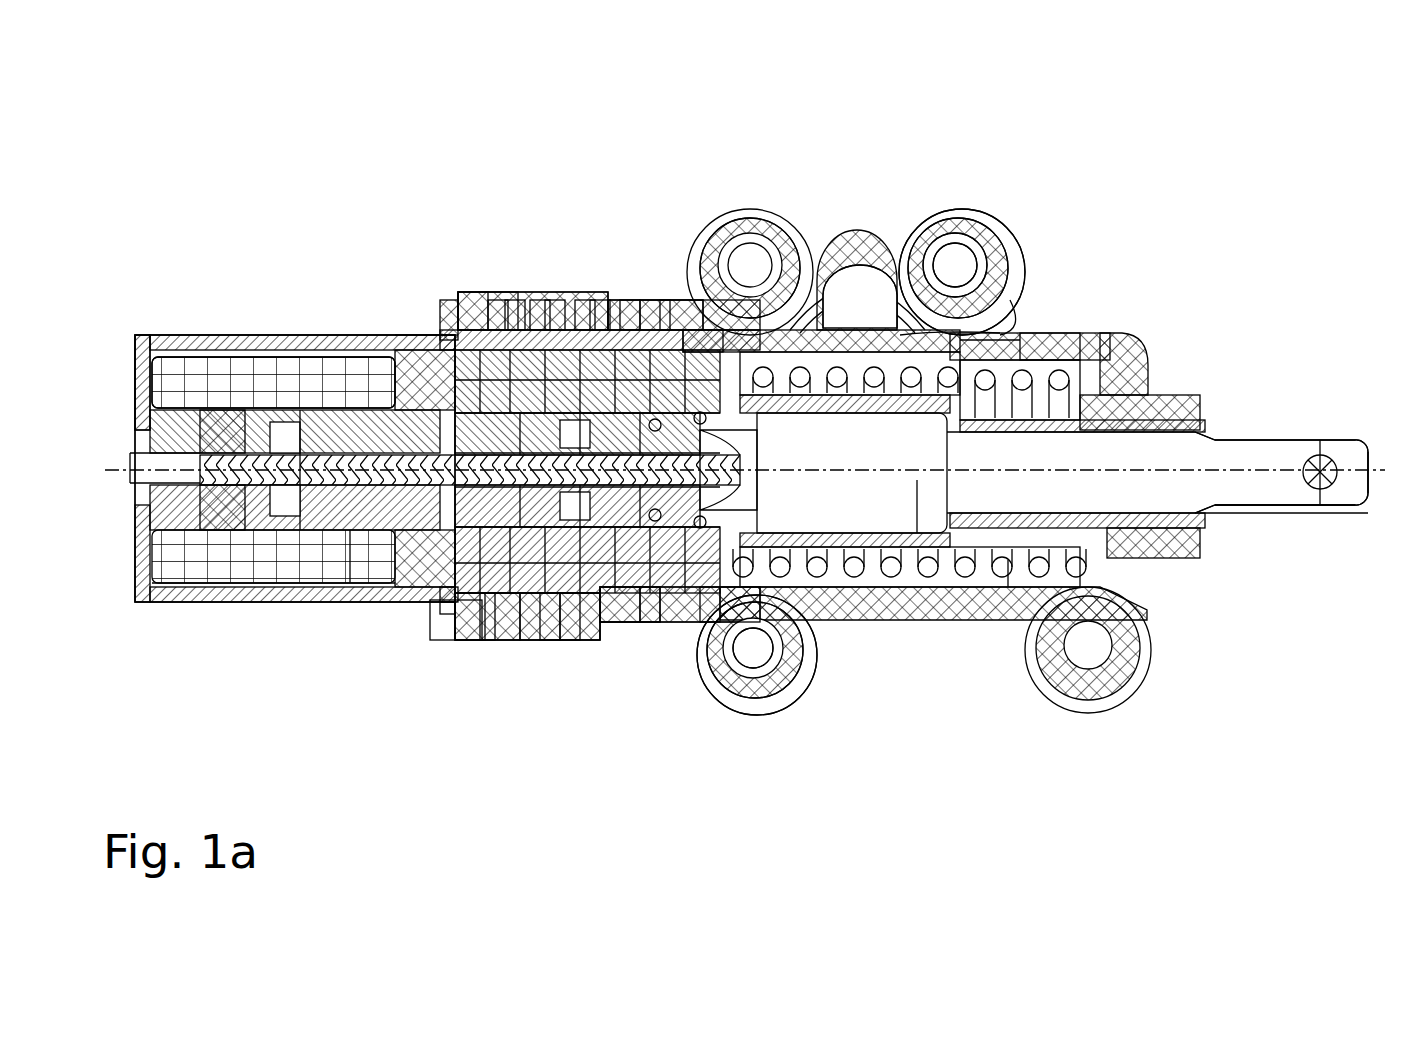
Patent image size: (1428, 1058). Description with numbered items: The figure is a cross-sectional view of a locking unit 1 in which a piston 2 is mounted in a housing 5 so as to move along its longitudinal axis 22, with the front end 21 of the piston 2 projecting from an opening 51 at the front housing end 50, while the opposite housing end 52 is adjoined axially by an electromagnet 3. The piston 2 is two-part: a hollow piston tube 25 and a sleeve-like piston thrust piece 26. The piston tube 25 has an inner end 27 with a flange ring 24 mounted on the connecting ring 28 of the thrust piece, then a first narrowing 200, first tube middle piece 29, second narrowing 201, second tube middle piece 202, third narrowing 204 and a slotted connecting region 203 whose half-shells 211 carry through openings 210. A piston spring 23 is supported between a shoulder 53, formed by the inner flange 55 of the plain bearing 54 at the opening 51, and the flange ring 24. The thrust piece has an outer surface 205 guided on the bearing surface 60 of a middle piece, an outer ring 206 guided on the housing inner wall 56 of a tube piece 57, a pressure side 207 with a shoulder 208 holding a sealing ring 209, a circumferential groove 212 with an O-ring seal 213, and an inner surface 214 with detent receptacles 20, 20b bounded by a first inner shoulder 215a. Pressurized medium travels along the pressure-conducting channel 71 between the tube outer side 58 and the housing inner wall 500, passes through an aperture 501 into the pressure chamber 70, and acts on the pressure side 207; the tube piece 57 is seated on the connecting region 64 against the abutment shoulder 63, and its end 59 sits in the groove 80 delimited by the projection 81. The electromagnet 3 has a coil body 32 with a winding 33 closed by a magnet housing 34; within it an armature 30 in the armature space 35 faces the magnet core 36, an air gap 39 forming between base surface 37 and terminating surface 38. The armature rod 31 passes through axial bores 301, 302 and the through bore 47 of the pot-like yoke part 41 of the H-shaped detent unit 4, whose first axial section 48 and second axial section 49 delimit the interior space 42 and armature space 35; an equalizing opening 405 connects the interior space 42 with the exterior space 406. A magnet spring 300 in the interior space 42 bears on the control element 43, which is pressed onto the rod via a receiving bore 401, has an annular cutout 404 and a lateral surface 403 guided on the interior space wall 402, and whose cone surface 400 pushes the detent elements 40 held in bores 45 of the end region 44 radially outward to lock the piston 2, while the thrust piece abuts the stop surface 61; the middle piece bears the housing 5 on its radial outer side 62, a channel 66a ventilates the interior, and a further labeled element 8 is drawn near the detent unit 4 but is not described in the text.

The locking unit 1 is at (240, 163).
The piston 2 is at (572, 295).
The electromagnet 3 is at (455, 735).
The detent unit 4 is at (604, 640).
The housing 5 is at (1090, 330).
The seal 8 is at (480, 647).
The detent receptacle 20 is at (768, 210).
The second detent receptacle 20b is at (560, 295).
The front end 21 is at (1380, 422).
The longitudinal axis 22 is at (905, 610).
The piston spring 23 is at (1060, 330).
The flange ring 24 is at (815, 320).
The piston tube 25 is at (1007, 303).
The piston thrust piece 26 is at (640, 640).
The inner end 27 is at (830, 640).
The connecting ring 28 is at (958, 262).
The first tube middle piece 29 is at (870, 615).
The armature 30 is at (347, 335).
The armature rod 31 is at (498, 292).
The coil body 32 is at (172, 335).
The winding 33 is at (232, 335).
The magnet housing 34 is at (210, 335).
The armature space 35 is at (297, 602).
The magnet core 36 is at (125, 485).
The base surface 37 is at (312, 335).
The terminating surface 38 is at (268, 602).
The air gap 39 is at (275, 335).
The detent elements 40 is at (670, 640).
The yoke part 41 is at (490, 640).
The interior space 42 is at (602, 295).
The control element 43 is at (780, 700).
The end region 44 is at (745, 710).
The bores 45 is at (720, 705).
The through bore 47 is at (410, 335).
The first axial section 48 is at (522, 782).
The second axial section 49 is at (430, 600).
The front housing end 50 is at (1205, 418).
The opening 51 is at (1210, 545).
The housing end 52 is at (447, 300).
The shoulder 53 is at (1140, 405).
The plain bearing 54 is at (1155, 565).
The inner flange 55 is at (1140, 340).
The housing inner wall 56 is at (893, 277).
The tube piece 57 is at (887, 240).
The tube outer side 58 is at (720, 225).
The end 59 is at (1010, 277).
The bearing surface 60 is at (630, 300).
The stop surface 61 is at (445, 332).
The radial outer side 62 is at (455, 650).
The abutment shoulder 63 is at (585, 295).
The connecting region 64 is at (580, 640).
The channel 66a is at (445, 612).
The pressure chamber 70 is at (657, 297).
The pressure-conducting channel 71 is at (853, 290).
The groove 80 is at (1000, 317).
The projection 81 is at (950, 620).
The first narrowing 200 is at (815, 690).
The second narrowing 201 is at (980, 620).
The second tube middle piece 202 is at (1008, 560).
The connecting region 203 is at (1210, 530).
The third narrowing 204 is at (1333, 427).
The outer surface 205 is at (565, 640).
The outer ring 206 is at (805, 265).
The pressure side 207 is at (655, 640).
The shoulder 208 is at (735, 700).
The sealing ring 209 is at (700, 640).
The through opening 210 is at (1325, 470).
The half-shells 211 is at (1350, 490).
The circumferential groove 212 is at (462, 292).
The O-ring seal 213 is at (466, 292).
The inner surface 214 is at (552, 292).
The first inner shoulder 215a is at (673, 303).
The magnet spring 300 is at (500, 640).
The axial bore 301 is at (372, 602).
The axial bore 302 is at (172, 602).
The cone surface 400 is at (707, 428).
The receiving bore 401 is at (733, 490).
The interior space wall 402 is at (618, 635).
The lateral surface 403 is at (733, 463).
The annular cutout 404 is at (555, 640).
The equalizing opening 405 is at (537, 290).
The exterior space 406 is at (520, 297).
The inner wall 500 is at (843, 270).
The aperture 501 is at (610, 290).